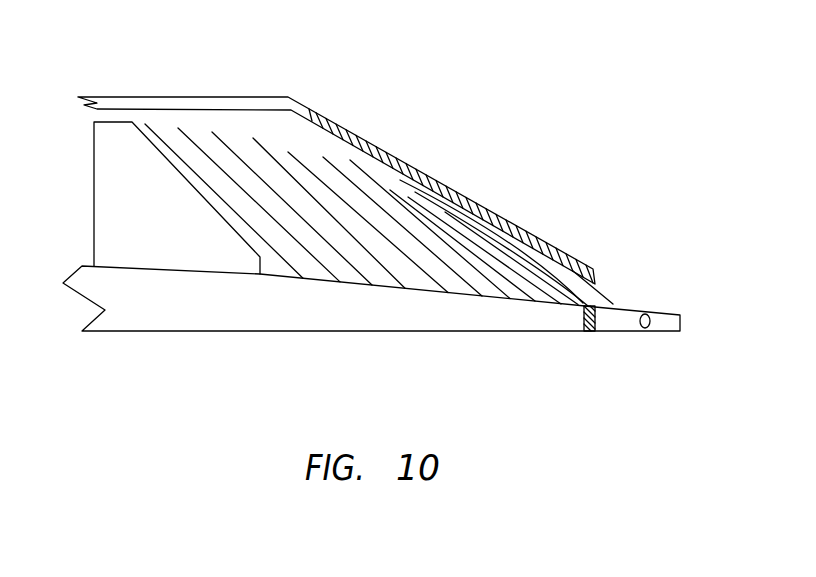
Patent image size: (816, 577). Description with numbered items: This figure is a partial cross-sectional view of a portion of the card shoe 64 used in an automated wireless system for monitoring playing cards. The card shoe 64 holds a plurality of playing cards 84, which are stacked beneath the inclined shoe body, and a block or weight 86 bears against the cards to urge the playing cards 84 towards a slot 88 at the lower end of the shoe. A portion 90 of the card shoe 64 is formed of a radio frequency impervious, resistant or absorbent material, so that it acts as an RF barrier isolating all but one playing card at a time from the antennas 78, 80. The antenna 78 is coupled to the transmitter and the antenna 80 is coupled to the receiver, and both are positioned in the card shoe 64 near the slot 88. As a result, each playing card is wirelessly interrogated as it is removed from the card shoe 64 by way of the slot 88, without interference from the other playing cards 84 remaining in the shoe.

The card shoe 64 is at (220, 96).
The playing cards 84 is at (363, 168).
The block or weight 86 is at (92, 213).
The portion of the card shoe 90 is at (573, 280).
The slot 88 is at (614, 291).
The antenna 78 is at (612, 324).
The antenna 80 is at (647, 325).